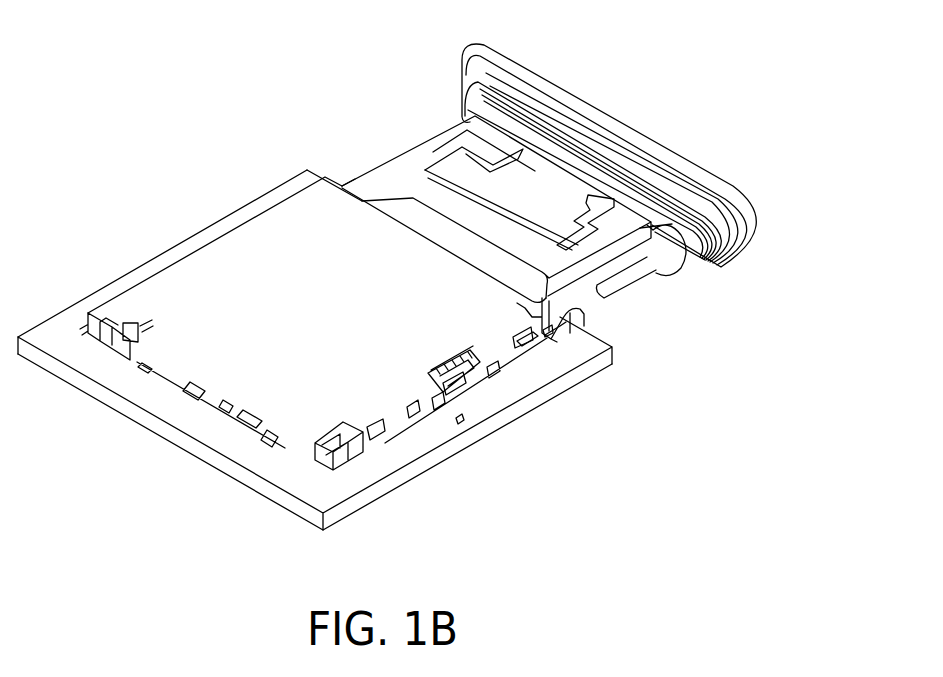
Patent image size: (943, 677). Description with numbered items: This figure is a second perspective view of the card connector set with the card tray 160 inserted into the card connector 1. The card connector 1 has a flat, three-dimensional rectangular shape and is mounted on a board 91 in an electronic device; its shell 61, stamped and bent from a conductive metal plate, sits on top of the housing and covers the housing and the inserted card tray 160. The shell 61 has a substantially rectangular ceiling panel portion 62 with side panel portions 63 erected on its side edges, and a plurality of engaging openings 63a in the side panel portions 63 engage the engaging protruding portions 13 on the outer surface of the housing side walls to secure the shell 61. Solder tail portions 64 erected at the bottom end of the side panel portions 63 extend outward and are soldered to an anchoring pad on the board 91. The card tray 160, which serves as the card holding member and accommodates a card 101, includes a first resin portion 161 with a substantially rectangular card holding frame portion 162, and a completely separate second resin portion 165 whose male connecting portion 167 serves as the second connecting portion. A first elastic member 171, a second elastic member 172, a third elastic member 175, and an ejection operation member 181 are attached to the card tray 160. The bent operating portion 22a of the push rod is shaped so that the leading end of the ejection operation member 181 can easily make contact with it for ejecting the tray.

The card connector 1 is at (179, 400).
The board 91 is at (342, 513).
The shell 61 is at (149, 259).
The ceiling panel portion 62 is at (216, 240).
The card 101 is at (350, 173).
The card tray 160 is at (351, 150).
The first resin portion 161 is at (383, 164).
The second elastic member 172 is at (447, 158).
The male connecting portion 167 is at (532, 192).
The card holding frame portion 162 is at (586, 296).
The operating portion 22a is at (568, 328).
The second resin portion 165 is at (523, 71).
The first elastic member 171 is at (714, 268).
The third elastic member 175 is at (678, 273).
The ejection operation member 181 is at (643, 294).
The engaging protruding portions 13 is at (468, 399).
The engaging openings 63a is at (466, 424).
The side panel portions 63 is at (434, 463).
The solder tail portions 64 is at (390, 458).